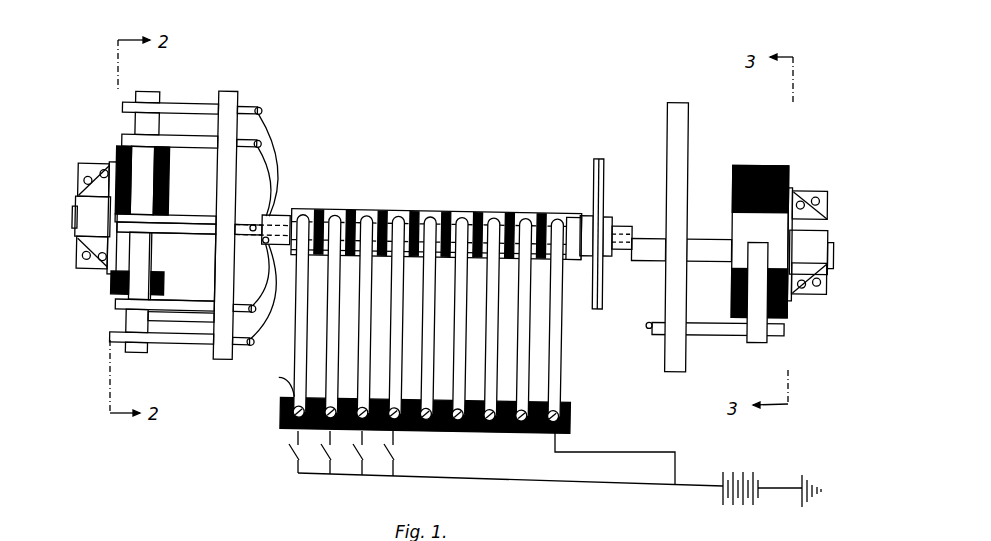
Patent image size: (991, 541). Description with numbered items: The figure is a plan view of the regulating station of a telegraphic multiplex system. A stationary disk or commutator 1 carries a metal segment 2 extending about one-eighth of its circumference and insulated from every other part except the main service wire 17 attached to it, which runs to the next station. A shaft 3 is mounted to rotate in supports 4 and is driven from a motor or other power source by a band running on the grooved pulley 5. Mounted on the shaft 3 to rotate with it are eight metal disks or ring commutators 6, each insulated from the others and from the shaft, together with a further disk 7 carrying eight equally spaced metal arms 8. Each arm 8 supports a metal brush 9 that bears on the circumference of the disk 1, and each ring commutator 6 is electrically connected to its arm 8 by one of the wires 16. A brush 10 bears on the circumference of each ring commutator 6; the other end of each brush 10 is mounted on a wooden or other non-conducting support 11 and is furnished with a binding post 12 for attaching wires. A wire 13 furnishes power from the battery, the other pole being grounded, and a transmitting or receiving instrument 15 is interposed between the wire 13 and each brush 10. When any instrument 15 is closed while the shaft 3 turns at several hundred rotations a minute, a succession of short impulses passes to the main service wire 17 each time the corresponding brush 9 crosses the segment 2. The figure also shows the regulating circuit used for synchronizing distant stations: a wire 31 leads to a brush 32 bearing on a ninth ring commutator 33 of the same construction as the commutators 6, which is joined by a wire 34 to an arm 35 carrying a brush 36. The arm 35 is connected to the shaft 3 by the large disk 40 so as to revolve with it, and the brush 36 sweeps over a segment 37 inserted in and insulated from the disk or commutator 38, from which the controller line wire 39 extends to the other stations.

The stationary disk or commutator 1 is at (115, 153).
The metal segment 2 is at (158, 253).
The shaft 3 is at (277, 213).
The supports 4 is at (88, 228).
The grooved pulley 5 is at (593, 180).
The ring commutators 6 is at (360, 208).
The disk 7 is at (234, 92).
The metal arms 8 is at (197, 108).
The metal brush 9 is at (139, 223).
The brush 10 is at (302, 344).
The non-conducting support 11 is at (503, 431).
The binding post 12 is at (277, 382).
The wire 13 is at (608, 484).
The transmitting or receiving instrument 15 is at (293, 453).
The wires 16 is at (268, 164).
The main service wire 17 is at (104, 268).
The wire 31 is at (631, 453).
The brush 32 is at (557, 361).
The ring commutator 33 is at (568, 215).
The wire 34 is at (633, 248).
The arm 35 is at (733, 334).
The brush 36 is at (759, 292).
The segment 37 is at (735, 219).
The disk or commutator 38 is at (775, 165).
The controller line wire 39 is at (805, 264).
The large disk 40 is at (683, 117).